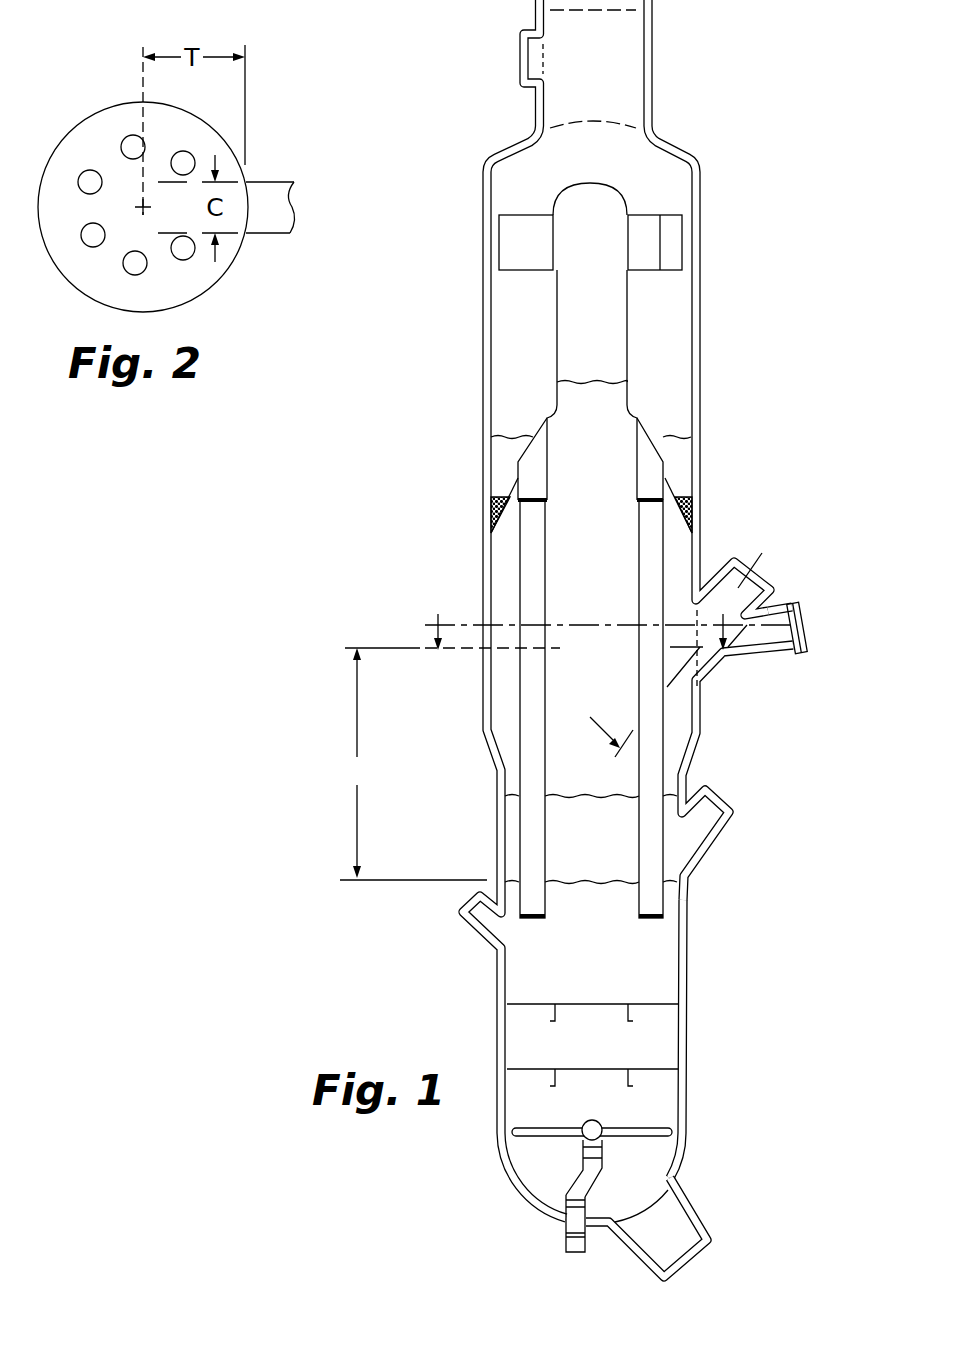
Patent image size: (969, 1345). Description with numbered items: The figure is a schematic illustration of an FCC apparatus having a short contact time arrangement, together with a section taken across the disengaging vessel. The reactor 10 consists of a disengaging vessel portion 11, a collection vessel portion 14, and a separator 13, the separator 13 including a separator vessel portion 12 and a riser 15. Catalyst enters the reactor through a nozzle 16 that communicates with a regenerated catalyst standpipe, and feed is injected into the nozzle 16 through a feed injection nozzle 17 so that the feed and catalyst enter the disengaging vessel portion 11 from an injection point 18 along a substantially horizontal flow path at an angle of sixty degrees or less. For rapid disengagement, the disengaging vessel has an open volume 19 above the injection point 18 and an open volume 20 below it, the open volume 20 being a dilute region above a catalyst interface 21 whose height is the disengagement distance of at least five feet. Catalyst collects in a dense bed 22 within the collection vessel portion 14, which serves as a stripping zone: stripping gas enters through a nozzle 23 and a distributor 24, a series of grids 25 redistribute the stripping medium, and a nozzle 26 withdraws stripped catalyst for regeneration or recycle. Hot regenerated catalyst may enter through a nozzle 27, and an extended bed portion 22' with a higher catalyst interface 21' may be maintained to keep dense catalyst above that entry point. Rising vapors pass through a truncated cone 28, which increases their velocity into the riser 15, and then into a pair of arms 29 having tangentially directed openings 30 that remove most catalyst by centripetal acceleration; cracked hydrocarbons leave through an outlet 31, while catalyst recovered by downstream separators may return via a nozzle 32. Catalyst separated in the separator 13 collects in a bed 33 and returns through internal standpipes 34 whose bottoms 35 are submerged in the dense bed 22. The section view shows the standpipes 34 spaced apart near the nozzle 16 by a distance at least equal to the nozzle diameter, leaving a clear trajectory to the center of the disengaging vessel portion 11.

In FIG. 1, the reactor 10 is at (578, 638).
In FIG. 1, the disengaging vessel portion 11 is at (483, 691).
In FIG. 2, the disengaging vessel portion 11 is at (86, 294).
In FIG. 1, the separator vessel portion 12 is at (700, 345).
In FIG. 1, the separator 13 is at (655, 299).
In FIG. 1, the collection vessel portion 14 is at (691, 972).
In FIG. 1, the riser 15 is at (630, 341).
In FIG. 1, the nozzle 16 is at (777, 590).
In FIG. 2, the nozzle 16 is at (269, 181).
In FIG. 1, the feed injection nozzle 17 is at (765, 652).
In FIG. 1, the injection point 18 is at (712, 677).
In FIG. 1, the open volume 19 is at (566, 546).
In FIG. 1, the open volume 20 is at (566, 759).
In FIG. 1, the catalyst interface 21 is at (480, 840).
In FIG. 1, the higher catalyst interface 21' is at (474, 750).
In FIG. 1, the dense bed 22 is at (591, 936).
In FIG. 1, the extended bed portion 22' is at (591, 825).
In FIG. 1, the nozzle 23 is at (566, 1241).
In FIG. 1, the distributor 24 is at (632, 1138).
In FIG. 1, the grids 25 is at (663, 1068).
In FIG. 1, the nozzle 26 is at (707, 1212).
In FIG. 1, the nozzle 27 is at (728, 815).
In FIG. 1, the truncated cone 28 is at (668, 478).
In FIG. 1, the arms 29 is at (645, 214).
In FIG. 1, the tangentially directed openings 30 is at (672, 233).
In FIG. 1, the outlet 31 is at (523, 33).
In FIG. 1, the nozzle 32 is at (480, 937).
In FIG. 1, the bed 33 is at (501, 454).
In FIG. 1, the internal standpipes 34 is at (536, 573).
In FIG. 2, the internal standpipes 34 is at (109, 145).
In FIG. 1, the bottoms 35 is at (537, 920).